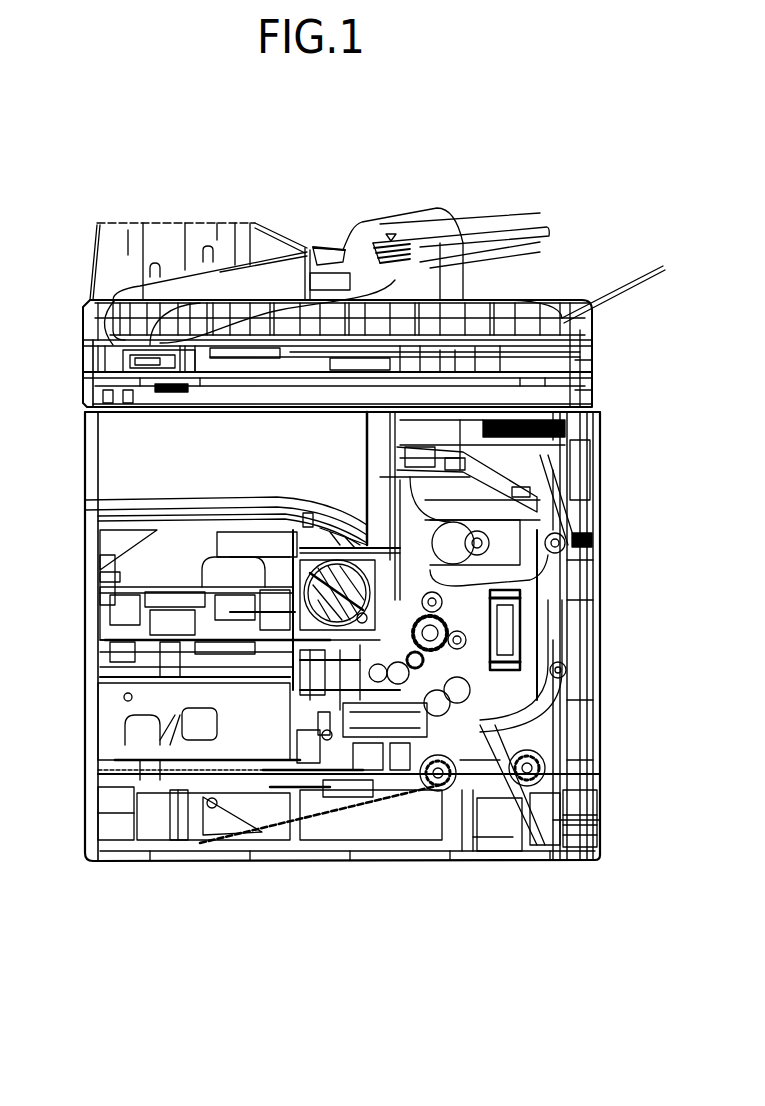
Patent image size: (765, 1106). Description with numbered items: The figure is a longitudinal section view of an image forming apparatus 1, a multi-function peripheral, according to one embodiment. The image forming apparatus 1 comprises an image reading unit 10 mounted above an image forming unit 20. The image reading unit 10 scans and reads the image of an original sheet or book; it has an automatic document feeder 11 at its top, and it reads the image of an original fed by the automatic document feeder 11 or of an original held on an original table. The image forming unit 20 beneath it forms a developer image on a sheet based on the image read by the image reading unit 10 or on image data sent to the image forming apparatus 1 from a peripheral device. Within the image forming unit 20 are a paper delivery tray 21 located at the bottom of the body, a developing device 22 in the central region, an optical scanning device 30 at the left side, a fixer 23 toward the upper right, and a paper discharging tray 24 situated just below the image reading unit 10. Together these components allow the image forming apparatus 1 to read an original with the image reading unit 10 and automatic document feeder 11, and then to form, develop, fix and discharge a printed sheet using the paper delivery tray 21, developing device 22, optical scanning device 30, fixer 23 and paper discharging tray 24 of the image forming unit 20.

The image forming apparatus 1 is at (160, 903).
The image reading unit 10 is at (78, 225).
The automatic document feeder 11 is at (372, 237).
The image forming unit 20 is at (78, 412).
The paper delivery tray 21 is at (398, 825).
The developing device 22 is at (466, 640).
The fixer 23 is at (489, 543).
The paper discharging tray 24 is at (218, 498).
The optical scanning device 30 is at (163, 583).